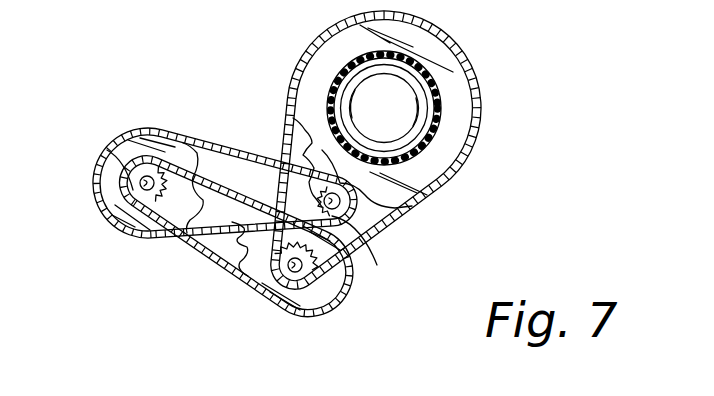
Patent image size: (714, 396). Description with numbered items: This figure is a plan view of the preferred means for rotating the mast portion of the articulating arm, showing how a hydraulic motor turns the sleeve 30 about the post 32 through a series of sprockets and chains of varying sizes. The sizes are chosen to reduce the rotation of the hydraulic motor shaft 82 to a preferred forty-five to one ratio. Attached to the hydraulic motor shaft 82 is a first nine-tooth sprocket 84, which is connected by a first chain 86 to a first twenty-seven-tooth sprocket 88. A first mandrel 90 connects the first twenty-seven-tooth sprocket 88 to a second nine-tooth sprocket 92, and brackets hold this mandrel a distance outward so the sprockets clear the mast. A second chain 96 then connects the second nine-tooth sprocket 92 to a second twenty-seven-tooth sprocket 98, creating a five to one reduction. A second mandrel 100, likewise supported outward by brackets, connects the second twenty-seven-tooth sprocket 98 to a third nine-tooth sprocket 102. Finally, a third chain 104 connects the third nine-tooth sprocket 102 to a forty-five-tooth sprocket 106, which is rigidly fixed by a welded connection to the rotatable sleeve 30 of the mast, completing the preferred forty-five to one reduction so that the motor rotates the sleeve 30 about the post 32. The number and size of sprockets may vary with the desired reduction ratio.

The sleeve 30 is at (437, 93).
The post 32 is at (433, 117).
The hydraulic motor shaft 82 is at (385, 205).
The first 9-tooth sprocket 84 is at (357, 238).
The first chain 86 is at (260, 155).
The first 27-tooth sprocket 88 is at (157, 125).
The first mandrel 90 is at (108, 150).
The second 9-tooth sprocket 92 is at (130, 187).
The second chain 96 is at (260, 275).
The second 27-tooth sprocket 98 is at (262, 296).
The second mandrel 100 is at (268, 302).
The third 9-tooth sprocket 102 is at (337, 280).
The third chain 104 is at (362, 233).
The 45-tooth sprocket 106 is at (437, 153).